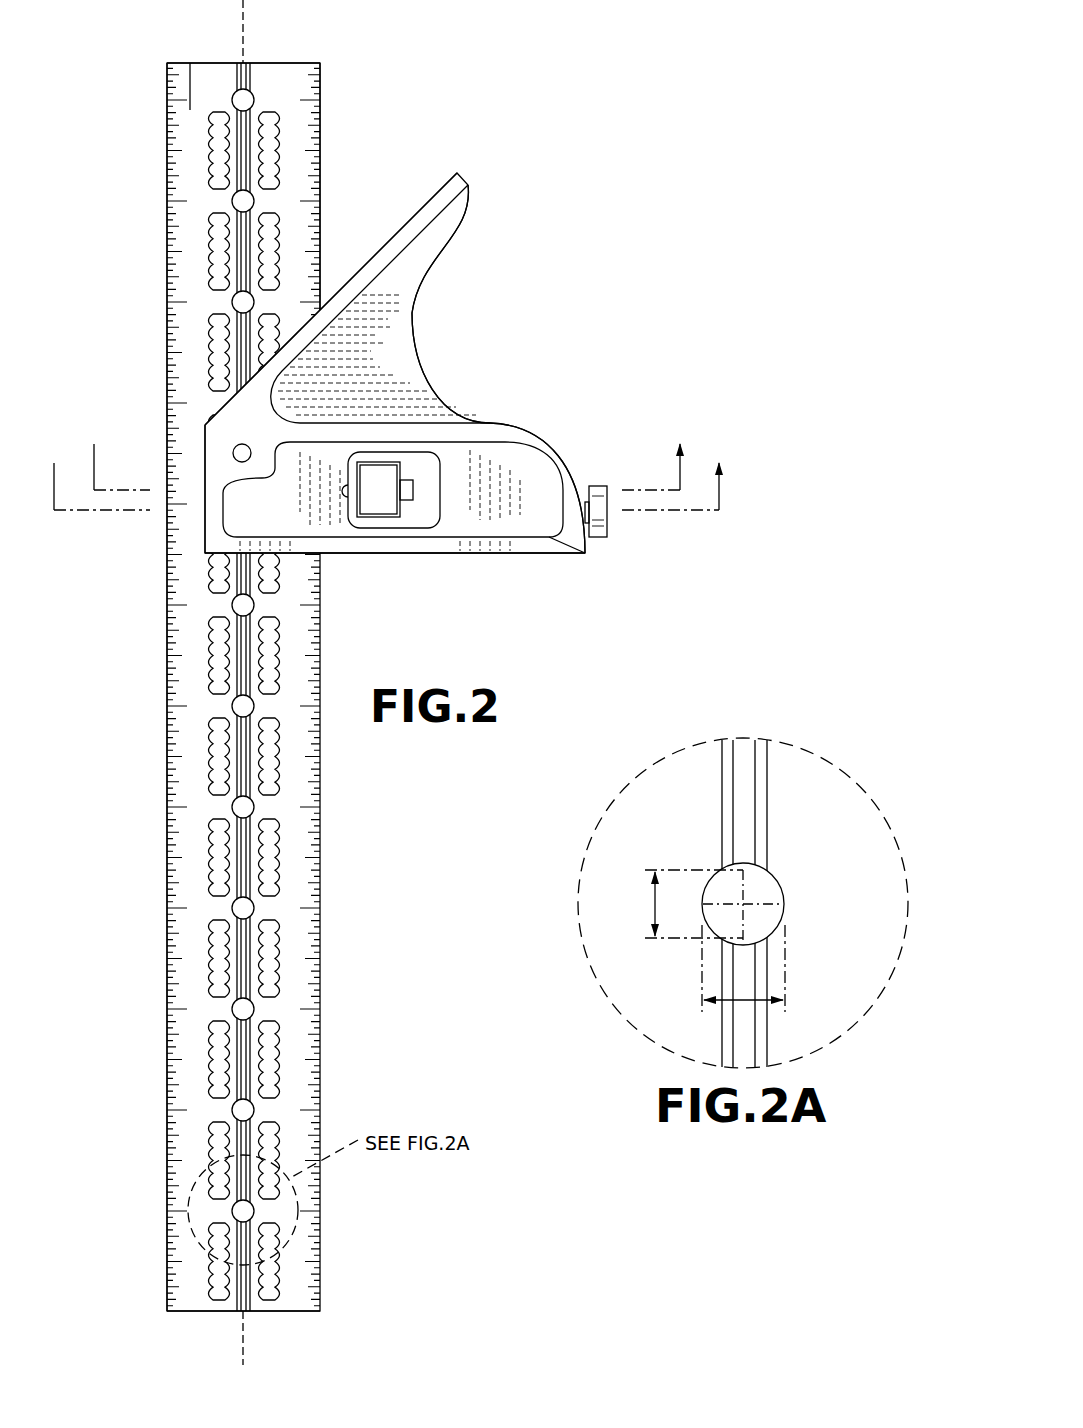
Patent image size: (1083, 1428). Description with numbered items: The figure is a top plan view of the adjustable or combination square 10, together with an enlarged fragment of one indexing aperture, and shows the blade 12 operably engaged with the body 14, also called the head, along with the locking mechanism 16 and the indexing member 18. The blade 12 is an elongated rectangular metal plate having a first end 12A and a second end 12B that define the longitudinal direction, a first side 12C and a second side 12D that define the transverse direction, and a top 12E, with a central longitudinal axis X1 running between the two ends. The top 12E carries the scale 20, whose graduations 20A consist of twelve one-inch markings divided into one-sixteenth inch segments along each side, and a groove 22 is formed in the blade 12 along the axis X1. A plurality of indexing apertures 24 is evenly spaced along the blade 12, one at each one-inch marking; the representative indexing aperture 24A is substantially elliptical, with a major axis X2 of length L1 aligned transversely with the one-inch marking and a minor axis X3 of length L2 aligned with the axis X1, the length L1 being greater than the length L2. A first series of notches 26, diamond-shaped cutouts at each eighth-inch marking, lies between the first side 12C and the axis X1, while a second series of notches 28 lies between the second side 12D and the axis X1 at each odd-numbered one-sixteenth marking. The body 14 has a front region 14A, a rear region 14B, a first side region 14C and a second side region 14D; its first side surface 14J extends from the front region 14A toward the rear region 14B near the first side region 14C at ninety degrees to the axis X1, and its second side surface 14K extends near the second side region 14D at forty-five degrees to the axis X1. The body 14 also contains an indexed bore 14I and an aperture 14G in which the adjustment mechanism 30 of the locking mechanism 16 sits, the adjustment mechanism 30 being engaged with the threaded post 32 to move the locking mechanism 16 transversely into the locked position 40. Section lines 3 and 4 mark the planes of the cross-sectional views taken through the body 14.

In FIG. 2, the combination square 10 is at (530, 228).
In FIG. 2, the blade 12 is at (237, 679).
In FIG. 2, the first end 12A is at (290, 1312).
In FIG. 2, the second end 12B is at (297, 63).
In FIG. 2, the first side 12C is at (170, 122).
In FIG. 2, the second side 12D is at (320, 97).
In FIG. 2, the top 12E is at (215, 80).
In FIG. 2, the body 14 is at (359, 388).
In FIG. 2, the front region 14A is at (197, 528).
In FIG. 2, the rear region 14B is at (522, 350).
In FIG. 2, the first side region 14C is at (483, 556).
In FIG. 2, the second side region 14D is at (372, 245).
In FIG. 2, the aperture 14G is at (428, 464).
In FIG. 2, the indexed bore 14I is at (247, 457).
In FIG. 2, the first side surface 14J is at (548, 554).
In FIG. 2, the second side surface 14K is at (420, 200).
In FIG. 2, the locking mechanism 16 is at (413, 534).
In FIG. 2, the indexing member 18 is at (611, 520).
In FIG. 2, the scale 20 is at (168, 842).
In FIG. 2, the graduations 20A is at (170, 683).
In FIG. 2, the groove 22 is at (238, 165).
In FIG. 2A, the groove 22 is at (755, 840).
In FIG. 2, the indexing apertures 24 is at (253, 92).
In FIG. 2A, the indexing apertures 24 is at (793, 901).
In FIG. 2A, the indexing aperture 24A is at (772, 888).
In FIG. 2, the first series of notches 26 is at (215, 1047).
In FIG. 2, the second series of notches 28 is at (275, 1070).
In FIG. 2, the adjustment mechanism 30 is at (378, 489).
In FIG. 2, the threaded post 32 is at (413, 490).
In FIG. 2, the locked position 40 is at (446, 491).
In FIG. 2, the section line 3- 3 is at (387, 453).
In FIG. 2, the section line 4- 4 is at (386, 474).
In FIG. 2, the central longitudinal axis X1 is at (243, 8).
In FIG. 2A, the major axis X2 is at (772, 906).
In FIG. 2A, the minor axis X3 is at (740, 888).
In FIG. 2A, the length of major axis L1 is at (745, 1000).
In FIG. 2A, the length of minor axis L2 is at (655, 903).